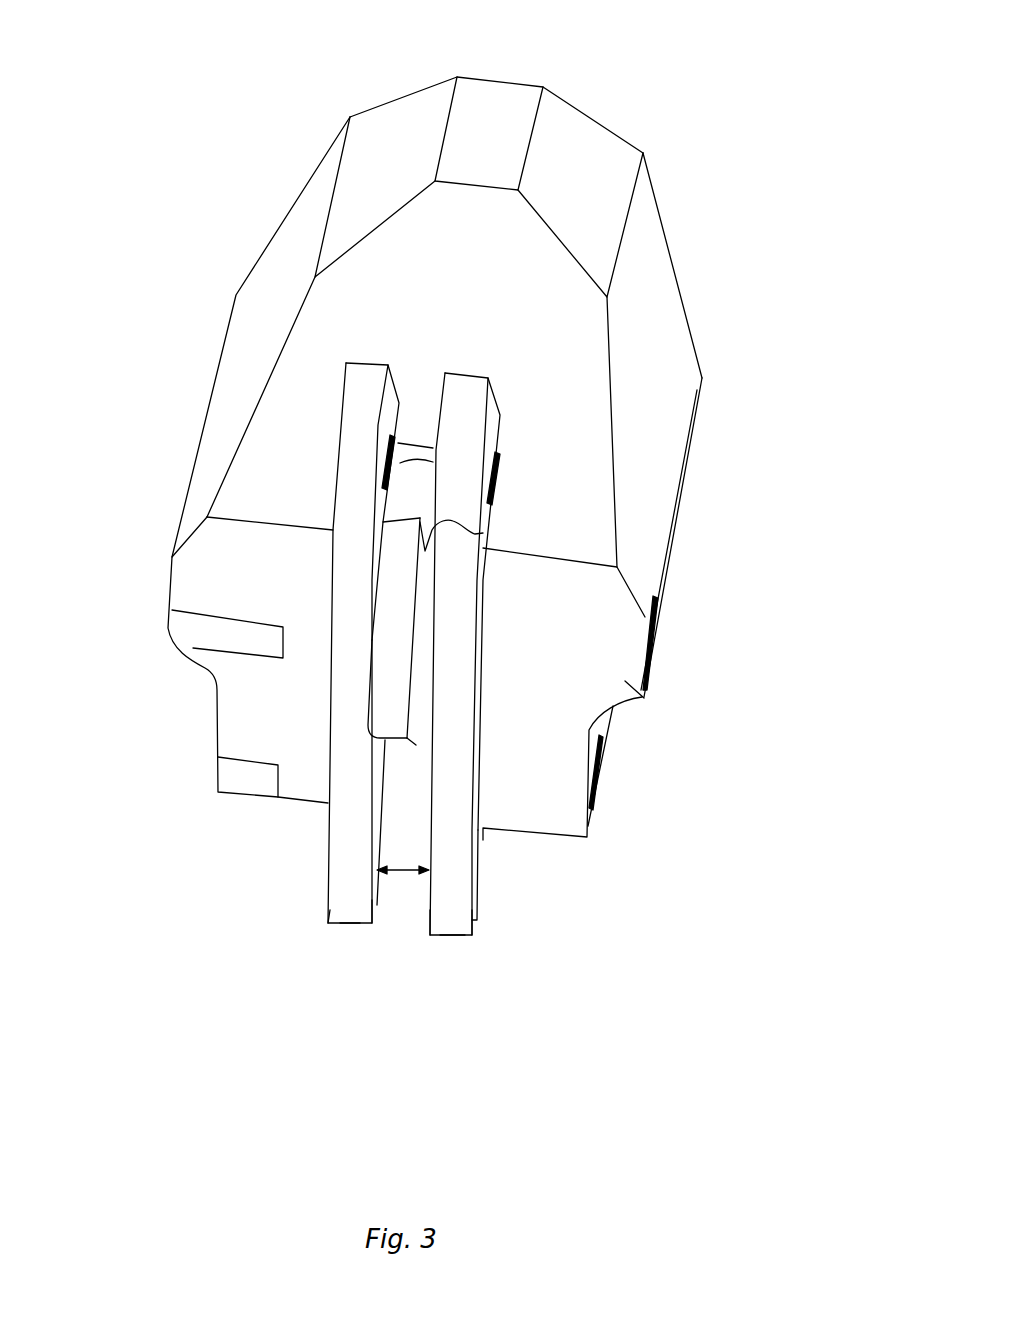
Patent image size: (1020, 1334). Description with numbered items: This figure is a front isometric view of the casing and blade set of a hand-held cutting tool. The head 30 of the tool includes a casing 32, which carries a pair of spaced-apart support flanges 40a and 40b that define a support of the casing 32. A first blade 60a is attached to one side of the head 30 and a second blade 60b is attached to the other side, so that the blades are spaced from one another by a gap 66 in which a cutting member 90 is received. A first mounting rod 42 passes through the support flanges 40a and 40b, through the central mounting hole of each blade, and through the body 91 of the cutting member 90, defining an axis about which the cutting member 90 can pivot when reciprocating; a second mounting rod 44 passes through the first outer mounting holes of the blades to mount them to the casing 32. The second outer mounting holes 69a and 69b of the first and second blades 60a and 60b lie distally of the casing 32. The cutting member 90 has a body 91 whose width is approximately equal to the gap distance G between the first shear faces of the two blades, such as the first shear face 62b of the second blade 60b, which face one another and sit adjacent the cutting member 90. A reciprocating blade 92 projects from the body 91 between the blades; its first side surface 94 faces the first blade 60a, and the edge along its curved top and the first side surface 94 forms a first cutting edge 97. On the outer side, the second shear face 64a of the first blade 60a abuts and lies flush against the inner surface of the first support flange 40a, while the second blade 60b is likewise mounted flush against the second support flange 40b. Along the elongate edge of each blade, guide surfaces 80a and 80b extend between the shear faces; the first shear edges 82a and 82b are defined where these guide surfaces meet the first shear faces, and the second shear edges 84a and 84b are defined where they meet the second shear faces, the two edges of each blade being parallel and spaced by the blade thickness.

The head 30 is at (384, 98).
The casing 32 is at (498, 100).
The first support flange 40a is at (644, 698).
The second support flange 40b is at (190, 590).
The first mounting rod 42 is at (662, 632).
The second mounting rod 44 is at (612, 781).
The first blade 60a is at (468, 384).
The second blade 60b is at (364, 378).
The first shear face of the second blade 62b is at (383, 775).
The second shear face of the first blade 64a is at (483, 863).
The gap 66 is at (417, 749).
The second outer mounting hole of the first blade 69a is at (499, 474).
The second outer mounting hole of the second blade 69b is at (398, 441).
The guide surface of the first blade 80a is at (455, 918).
The guide surface of the second blade 80b is at (348, 916).
The first shear edge of the first blade 82a is at (430, 920).
The first shear edge of the second blade 82b is at (383, 916).
The second shear edge of the first blade 84a is at (477, 905).
The second shear edge of the second blade 84b is at (328, 900).
The cutting member 90 is at (382, 677).
The body 91 is at (428, 510).
The reciprocating blade 92 is at (392, 550).
The first side surface 94 is at (422, 620).
The first cutting edge 97 is at (483, 533).
The gap distance G is at (396, 872).